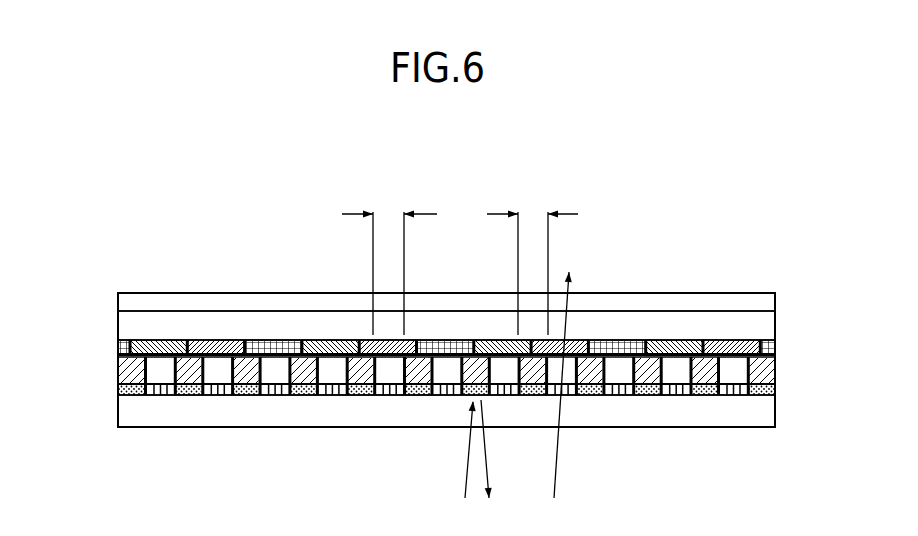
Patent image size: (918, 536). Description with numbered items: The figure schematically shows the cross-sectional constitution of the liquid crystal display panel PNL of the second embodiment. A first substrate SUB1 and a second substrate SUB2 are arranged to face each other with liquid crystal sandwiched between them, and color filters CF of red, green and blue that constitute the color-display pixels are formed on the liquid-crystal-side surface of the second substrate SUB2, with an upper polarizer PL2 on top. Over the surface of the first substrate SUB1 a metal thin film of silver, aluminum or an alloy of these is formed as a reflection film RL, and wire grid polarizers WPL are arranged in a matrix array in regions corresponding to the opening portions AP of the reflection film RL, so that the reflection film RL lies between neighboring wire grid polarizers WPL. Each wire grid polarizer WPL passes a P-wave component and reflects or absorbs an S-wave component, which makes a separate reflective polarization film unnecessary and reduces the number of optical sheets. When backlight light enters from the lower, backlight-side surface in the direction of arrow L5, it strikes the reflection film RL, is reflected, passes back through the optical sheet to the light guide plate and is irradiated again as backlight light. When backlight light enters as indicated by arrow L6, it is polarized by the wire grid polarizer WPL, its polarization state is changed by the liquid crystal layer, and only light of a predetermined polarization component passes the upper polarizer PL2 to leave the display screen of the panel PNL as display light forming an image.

The liquid crystal display panel PNL is at (730, 288).
The upper polarizer PL2 is at (462, 293).
The second substrate SUB2 is at (620, 318).
The color filters CF is at (436, 273).
The opening portions AP is at (389, 258).
The reflection film RL is at (363, 447).
The wire grid polarizer WPL is at (268, 393).
The first substrate SUB1 is at (692, 420).
The arrow L5 is at (461, 454).
The arrow L6 is at (545, 390).